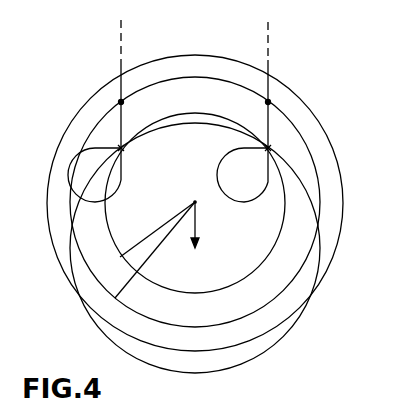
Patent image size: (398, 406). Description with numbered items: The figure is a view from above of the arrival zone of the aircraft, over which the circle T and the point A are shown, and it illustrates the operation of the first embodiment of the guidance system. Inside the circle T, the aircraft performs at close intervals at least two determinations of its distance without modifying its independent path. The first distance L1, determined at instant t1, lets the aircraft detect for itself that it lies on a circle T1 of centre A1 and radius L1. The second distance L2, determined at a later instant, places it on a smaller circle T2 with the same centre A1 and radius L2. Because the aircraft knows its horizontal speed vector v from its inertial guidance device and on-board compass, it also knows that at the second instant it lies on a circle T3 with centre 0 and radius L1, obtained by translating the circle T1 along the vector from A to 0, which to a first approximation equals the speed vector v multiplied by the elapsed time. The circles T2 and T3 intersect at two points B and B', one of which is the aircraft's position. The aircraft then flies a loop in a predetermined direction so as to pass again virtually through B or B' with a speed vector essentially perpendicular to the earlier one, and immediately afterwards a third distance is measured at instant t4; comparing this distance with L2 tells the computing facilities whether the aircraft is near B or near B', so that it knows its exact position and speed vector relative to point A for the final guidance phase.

The circle T is at (104, 88).
The circle T1 is at (272, 301).
The circle T2 is at (238, 282).
The circle T3 is at (239, 367).
The intersection point B is at (152, 122).
The intersection point B' is at (323, 122).
The instant t1 is at (121, 102).
The instant t4 is at (328, 153).
The point A is at (184, 193).
The centre A1 is at (209, 218).
The horizontal speed vector v is at (214, 232).
The centre O 0 is at (201, 256).
The first distance L1 is at (155, 250).
The second distance L2 is at (157, 229).